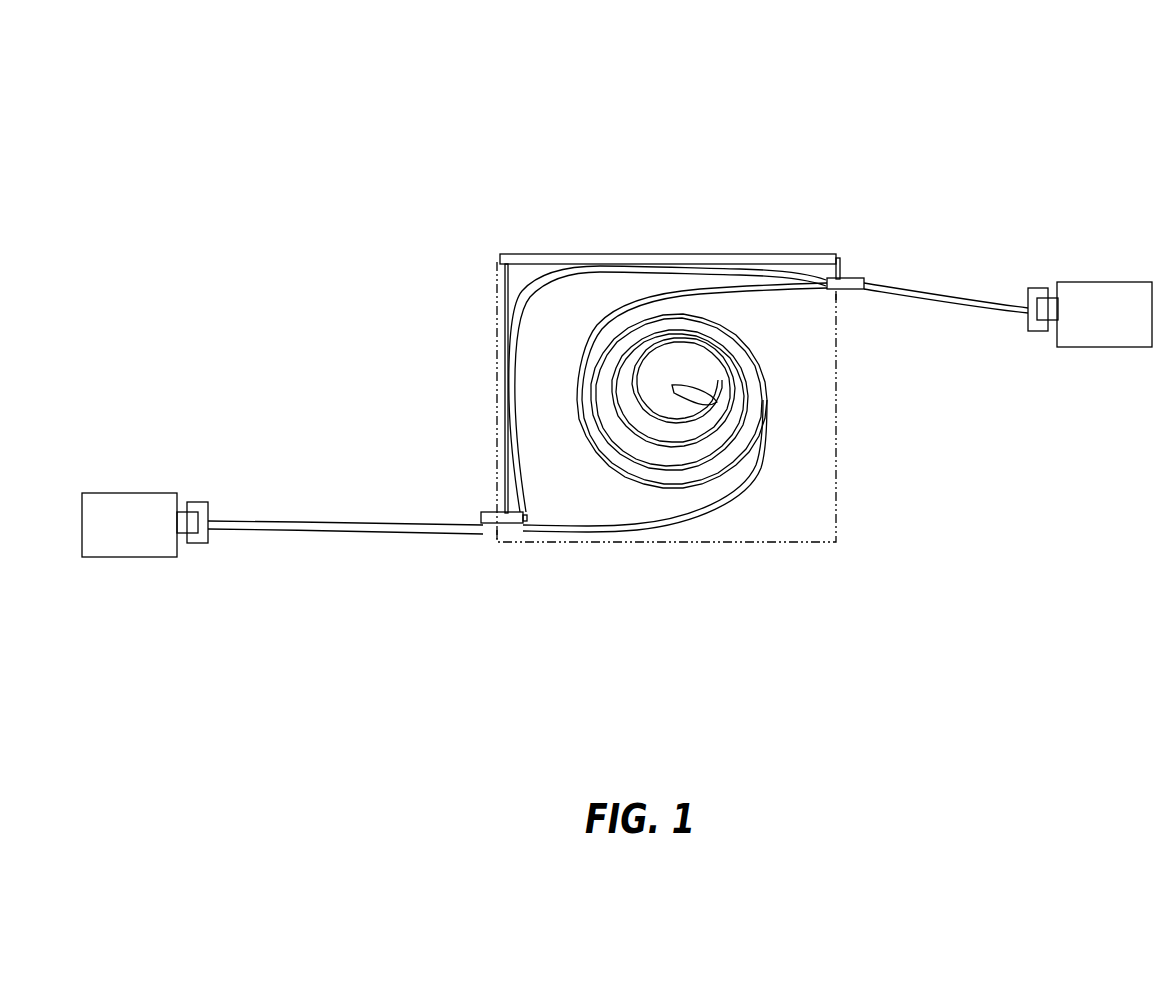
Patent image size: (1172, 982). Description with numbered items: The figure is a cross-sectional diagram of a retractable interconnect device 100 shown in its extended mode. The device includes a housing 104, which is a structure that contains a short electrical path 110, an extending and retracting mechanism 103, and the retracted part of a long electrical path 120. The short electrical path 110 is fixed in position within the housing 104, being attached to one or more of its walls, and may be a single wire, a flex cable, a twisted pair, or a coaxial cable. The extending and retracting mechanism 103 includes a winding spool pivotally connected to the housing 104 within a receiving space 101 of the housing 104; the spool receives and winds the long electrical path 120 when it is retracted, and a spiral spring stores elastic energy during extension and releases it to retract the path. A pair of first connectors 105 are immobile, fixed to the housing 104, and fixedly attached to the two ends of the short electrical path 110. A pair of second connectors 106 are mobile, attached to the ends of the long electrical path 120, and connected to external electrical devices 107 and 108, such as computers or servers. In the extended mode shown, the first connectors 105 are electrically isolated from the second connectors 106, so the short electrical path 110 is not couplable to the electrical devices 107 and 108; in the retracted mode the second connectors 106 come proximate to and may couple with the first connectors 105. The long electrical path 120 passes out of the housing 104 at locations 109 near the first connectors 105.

The retractable interconnect device 100 is at (1042, 88).
The receiving space 101 is at (666, 402).
The extending and retracting mechanism 103 is at (757, 363).
The housing 104 is at (785, 253).
The first connectors 105 is at (487, 513).
The second connectors 106 is at (193, 545).
The electrical device 107 is at (129, 525).
The electrical device 108 is at (1104, 314).
The aperture 109 is at (490, 545).
The short electrical path 110 is at (533, 283).
The long electrical path 120 is at (332, 525).